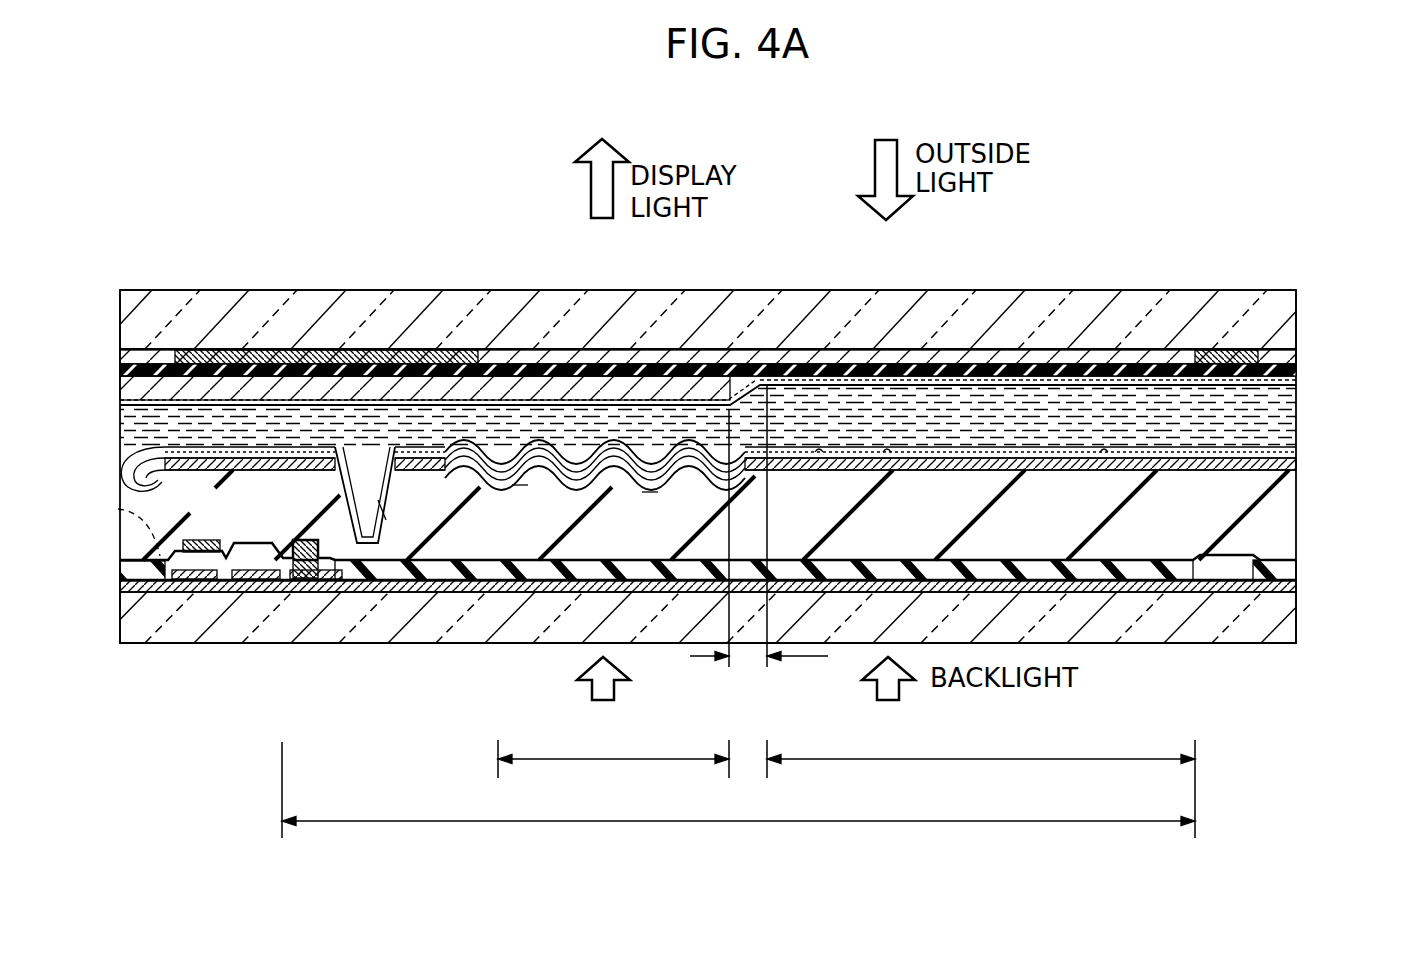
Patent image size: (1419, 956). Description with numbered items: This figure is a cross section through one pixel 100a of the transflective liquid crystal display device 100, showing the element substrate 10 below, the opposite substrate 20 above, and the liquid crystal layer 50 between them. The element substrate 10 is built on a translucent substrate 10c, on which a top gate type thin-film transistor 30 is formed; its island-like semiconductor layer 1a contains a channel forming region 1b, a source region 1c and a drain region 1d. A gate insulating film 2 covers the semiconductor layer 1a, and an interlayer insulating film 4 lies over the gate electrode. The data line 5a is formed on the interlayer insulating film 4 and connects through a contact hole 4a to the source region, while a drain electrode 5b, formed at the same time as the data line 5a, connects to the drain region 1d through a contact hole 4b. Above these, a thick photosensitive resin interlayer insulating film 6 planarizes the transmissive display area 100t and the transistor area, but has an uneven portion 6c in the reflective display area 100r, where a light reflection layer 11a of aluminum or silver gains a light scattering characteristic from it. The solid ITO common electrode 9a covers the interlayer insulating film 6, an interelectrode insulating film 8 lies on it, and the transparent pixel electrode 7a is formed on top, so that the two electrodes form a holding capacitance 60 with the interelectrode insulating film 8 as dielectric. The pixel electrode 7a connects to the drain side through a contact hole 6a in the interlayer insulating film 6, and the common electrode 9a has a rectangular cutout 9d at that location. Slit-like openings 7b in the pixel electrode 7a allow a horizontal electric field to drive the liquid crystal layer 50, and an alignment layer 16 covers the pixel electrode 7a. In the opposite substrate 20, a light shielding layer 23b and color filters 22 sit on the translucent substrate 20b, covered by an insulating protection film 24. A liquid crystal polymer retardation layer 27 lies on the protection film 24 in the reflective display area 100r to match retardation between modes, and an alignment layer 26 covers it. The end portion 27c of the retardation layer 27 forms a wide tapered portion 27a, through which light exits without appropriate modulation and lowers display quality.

The liquid crystal display device 100 is at (1123, 216).
The translucent substrate 20b is at (1305, 290).
The opposite substrate 20 is at (1368, 290).
The color filter 22 is at (1298, 358).
The light shielding layer 23b is at (240, 350).
The insulating protection film 24 is at (1298, 378).
The retardation layer 27 is at (562, 387).
The alignment layer 26 is at (1072, 378).
The liquid crystal layer 50 is at (1305, 385).
The alignment layer 16 is at (1298, 452).
The slit-like opening 7b is at (823, 448).
The interelectrode insulating film 8 is at (1296, 463).
The pixel electrode 7a is at (547, 447).
The rectangular cutout 9d is at (396, 445).
The interlayer insulating film 6 is at (1305, 472).
The common electrode 9a is at (823, 473).
The holding capacitance 60 is at (1096, 483).
The contact hole 6a is at (385, 505).
The uneven portion 6c is at (523, 493).
The light reflection layer 11a is at (650, 494).
The interlayer insulating film 4 is at (1278, 578).
The gate insulating film 2 is at (1294, 587).
The translucent substrate 10c is at (1305, 592).
The element substrate 10 is at (1365, 648).
The contact hole 4a is at (118, 509).
The data line 5a is at (195, 540).
The contact hole 4b is at (293, 548).
The drain electrode 5b is at (316, 540).
The source region 1c is at (185, 592).
The thin-film transistor 30 is at (237, 601).
The semiconductor layer 1a is at (268, 603).
The drain region 1d is at (317, 595).
The channel forming region 1b is at (252, 597).
The end portion 27c is at (748, 660).
The tapered portion 27a is at (795, 549).
The reflective display area 100r is at (613, 754).
The transmissive display area 100t is at (981, 784).
The pixel 100a is at (738, 790).